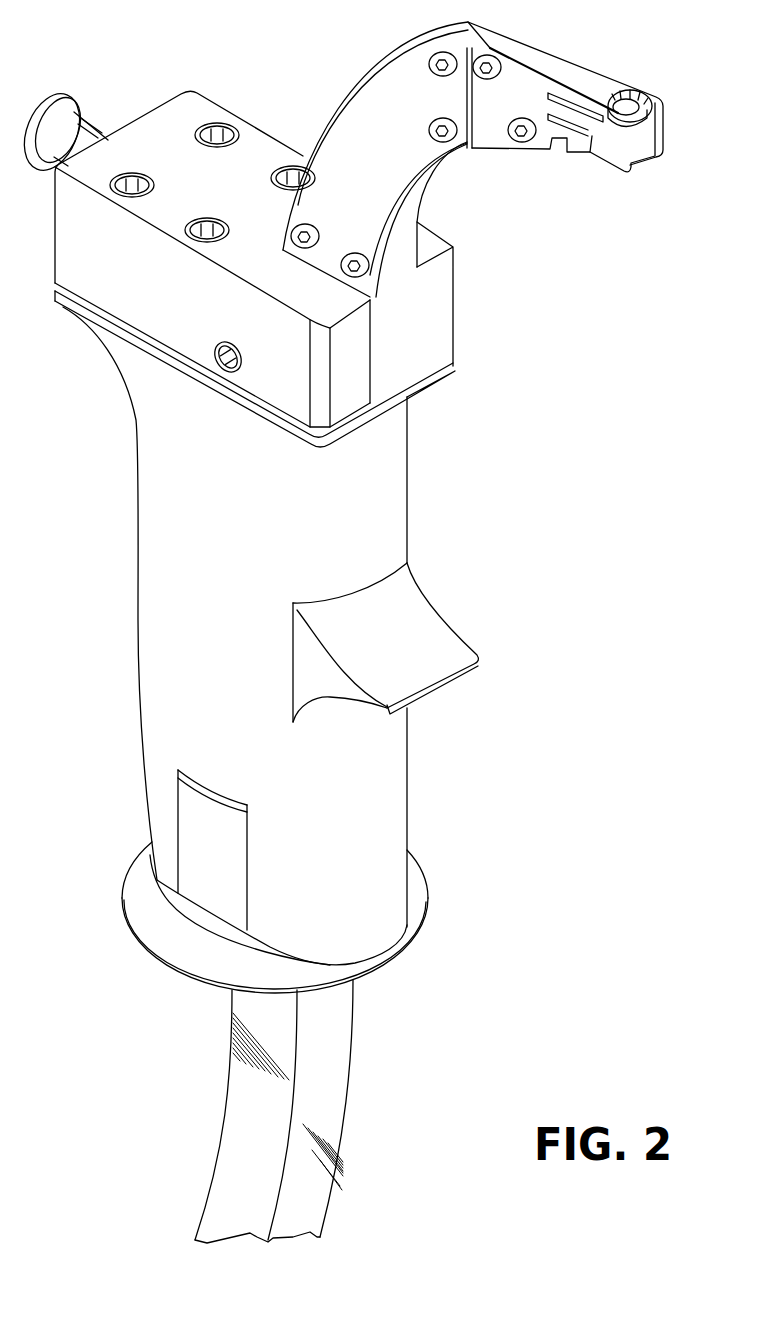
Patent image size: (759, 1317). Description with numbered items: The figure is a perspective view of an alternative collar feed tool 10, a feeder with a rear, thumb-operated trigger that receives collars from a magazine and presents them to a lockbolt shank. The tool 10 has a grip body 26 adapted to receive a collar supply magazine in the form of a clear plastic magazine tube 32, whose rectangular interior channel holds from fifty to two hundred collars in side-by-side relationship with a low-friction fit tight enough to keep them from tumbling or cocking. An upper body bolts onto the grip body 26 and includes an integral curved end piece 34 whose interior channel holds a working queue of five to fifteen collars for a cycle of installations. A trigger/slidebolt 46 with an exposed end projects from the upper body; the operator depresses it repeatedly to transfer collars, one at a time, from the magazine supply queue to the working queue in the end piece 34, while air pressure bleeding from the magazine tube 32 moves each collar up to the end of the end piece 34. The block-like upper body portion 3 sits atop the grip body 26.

The housing block 3 is at (427, 306).
The collar feed tool 10 is at (451, 467).
The grip body 26 is at (177, 624).
The magazine tube 32 is at (240, 1170).
The curved end piece 34 is at (371, 76).
The trigger/slidebolt 46 is at (75, 110).